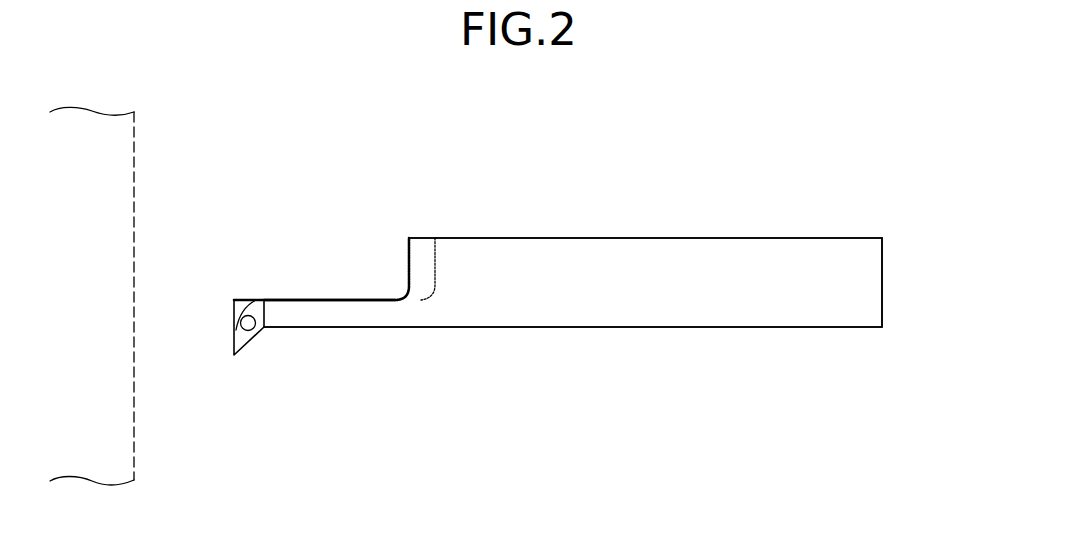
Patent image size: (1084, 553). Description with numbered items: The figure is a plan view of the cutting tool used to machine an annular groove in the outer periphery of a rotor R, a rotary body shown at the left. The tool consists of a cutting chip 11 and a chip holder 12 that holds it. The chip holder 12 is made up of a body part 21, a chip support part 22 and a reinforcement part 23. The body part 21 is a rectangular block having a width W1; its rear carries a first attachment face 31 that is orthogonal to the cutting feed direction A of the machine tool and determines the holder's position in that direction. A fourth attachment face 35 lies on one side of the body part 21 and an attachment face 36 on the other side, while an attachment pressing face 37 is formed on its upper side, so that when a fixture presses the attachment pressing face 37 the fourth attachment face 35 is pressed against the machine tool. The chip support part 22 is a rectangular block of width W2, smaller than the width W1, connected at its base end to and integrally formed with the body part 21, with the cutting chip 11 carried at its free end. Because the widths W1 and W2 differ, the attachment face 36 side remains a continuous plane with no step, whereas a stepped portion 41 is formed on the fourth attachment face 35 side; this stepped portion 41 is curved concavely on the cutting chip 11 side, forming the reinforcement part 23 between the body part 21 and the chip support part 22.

The cutting chip 11 is at (255, 338).
The chip holder 12 is at (570, 272).
The body part 21 is at (797, 238).
The chip support part 22 is at (290, 299).
The reinforcement part 23 is at (414, 238).
The first attachment face 31 is at (882, 297).
The fourth attachment face 35 is at (660, 237).
The attachment face 36 is at (656, 328).
The attachment pressing face 37 is at (581, 275).
The stepped portion 41 is at (407, 270).
The rotor R is at (136, 152).
The cutting feed direction A is at (304, 207).
The width of the body part W1 is at (882, 238).
The width of the chip support part W2 is at (234, 300).